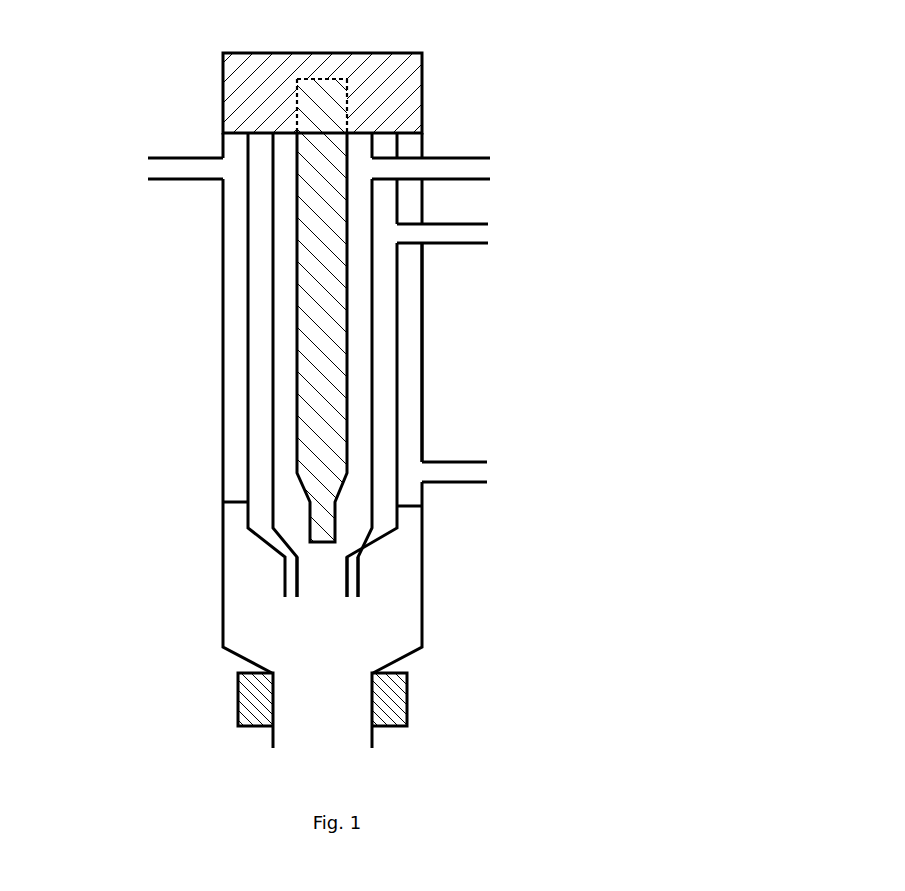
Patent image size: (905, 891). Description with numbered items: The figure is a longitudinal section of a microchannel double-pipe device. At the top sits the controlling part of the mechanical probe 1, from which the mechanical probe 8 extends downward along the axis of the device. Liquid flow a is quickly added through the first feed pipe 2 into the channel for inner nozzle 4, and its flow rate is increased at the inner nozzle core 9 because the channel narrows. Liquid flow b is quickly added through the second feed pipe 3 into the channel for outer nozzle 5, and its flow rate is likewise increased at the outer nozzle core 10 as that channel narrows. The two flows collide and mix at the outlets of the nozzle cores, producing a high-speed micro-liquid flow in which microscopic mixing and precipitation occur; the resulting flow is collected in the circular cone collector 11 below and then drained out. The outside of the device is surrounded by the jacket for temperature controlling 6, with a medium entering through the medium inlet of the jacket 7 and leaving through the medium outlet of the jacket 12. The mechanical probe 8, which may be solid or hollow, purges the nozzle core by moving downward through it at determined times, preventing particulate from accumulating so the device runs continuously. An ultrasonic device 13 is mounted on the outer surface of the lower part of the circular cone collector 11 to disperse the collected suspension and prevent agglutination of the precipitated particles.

The controlling part of the mechanical probe 1 is at (397, 102).
The first feed pipe 2 is at (473, 169).
The second feed pipe 3 is at (475, 233).
The channel for inner nozzle 4 is at (360, 318).
The channel for outer nozzle 5 is at (390, 353).
The jacket for temperature controlling 6 is at (417, 400).
The medium inlet of the jacket 7 is at (475, 472).
The mechanical probe 8 is at (328, 458).
The inner nozzle core 9 is at (328, 573).
The outer nozzle core 10 is at (352, 587).
The circular cone collector 11 is at (268, 597).
The medium outlet of the jacket 12 is at (182, 168).
The ultrasonic device 13 is at (385, 703).